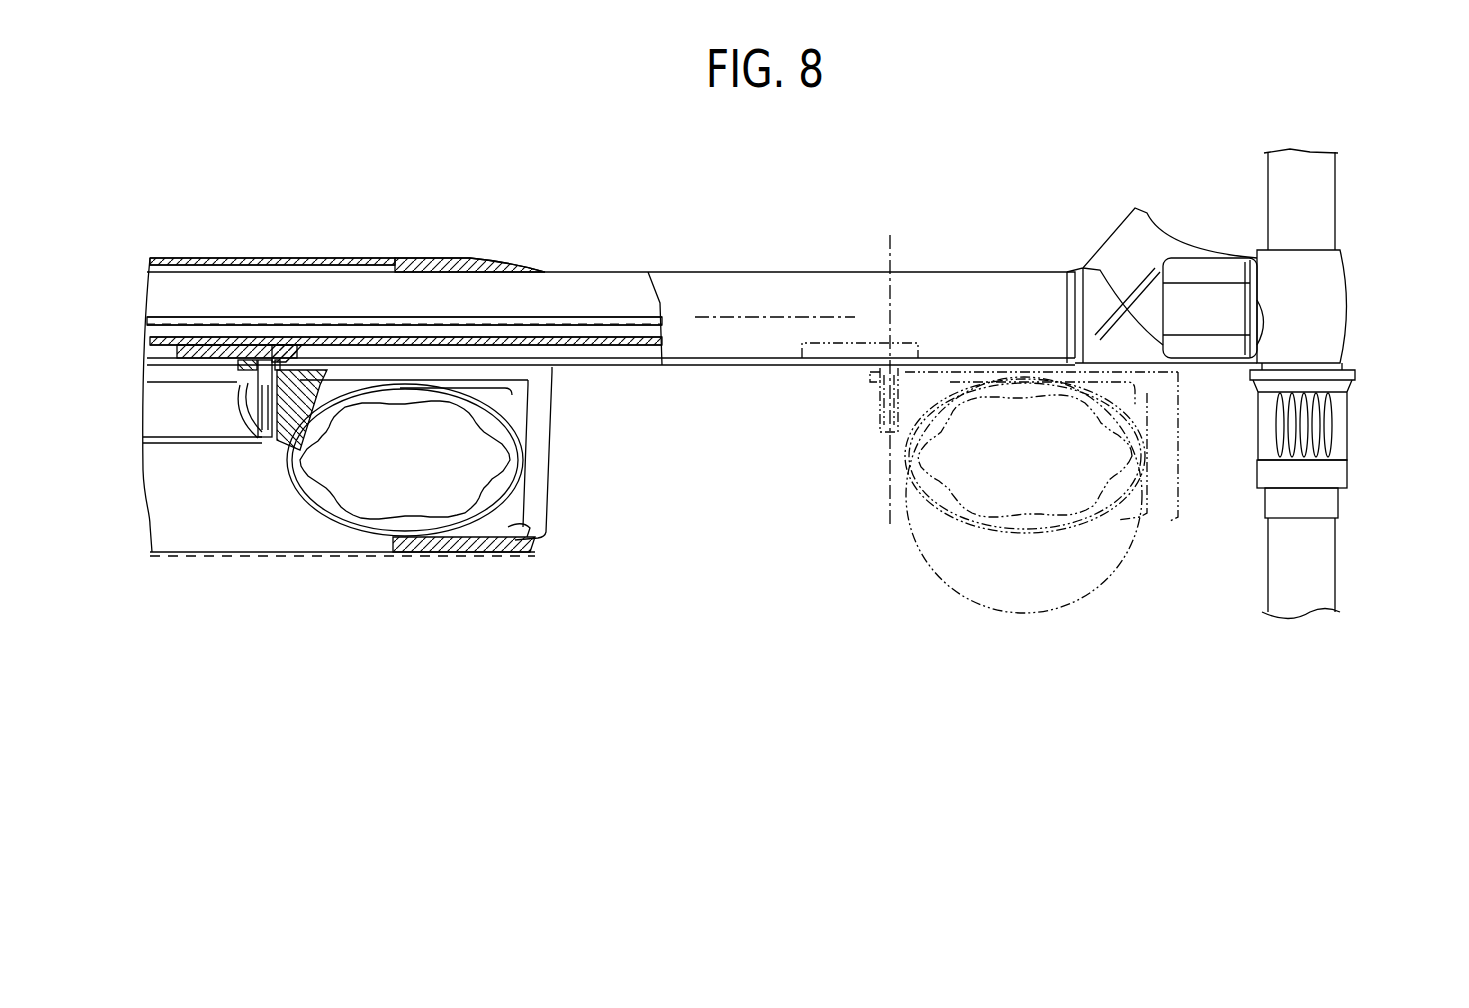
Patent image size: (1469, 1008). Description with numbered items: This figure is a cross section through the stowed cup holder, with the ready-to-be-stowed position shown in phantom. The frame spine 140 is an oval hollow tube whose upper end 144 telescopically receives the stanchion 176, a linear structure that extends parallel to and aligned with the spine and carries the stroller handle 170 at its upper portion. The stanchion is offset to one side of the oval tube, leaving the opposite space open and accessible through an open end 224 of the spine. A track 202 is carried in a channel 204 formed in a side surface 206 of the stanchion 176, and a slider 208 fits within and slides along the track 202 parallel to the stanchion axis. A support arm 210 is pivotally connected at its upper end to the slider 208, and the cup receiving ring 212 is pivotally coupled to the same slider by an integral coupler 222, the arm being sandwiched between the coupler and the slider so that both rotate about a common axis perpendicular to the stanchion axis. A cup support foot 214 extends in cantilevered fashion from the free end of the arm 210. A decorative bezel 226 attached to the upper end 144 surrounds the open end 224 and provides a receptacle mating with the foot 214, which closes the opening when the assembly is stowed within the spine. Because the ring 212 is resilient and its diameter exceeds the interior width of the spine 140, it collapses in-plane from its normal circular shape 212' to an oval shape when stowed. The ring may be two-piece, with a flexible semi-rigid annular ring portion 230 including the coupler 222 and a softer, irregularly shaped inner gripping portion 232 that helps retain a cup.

The frame spine 140 is at (180, 552).
The upper end of the spine 144 is at (445, 555).
The stroller handle 170 is at (1372, 291).
The stanchion 176 is at (702, 290).
The track 202 is at (357, 353).
The channel 204 is at (621, 348).
The side surface of the stanchion 206 is at (682, 370).
The slider 208 is at (910, 355).
The support arm 210 is at (970, 374).
The cup receiving ring 212 is at (1025, 493).
The ring (expanded position) 212' is at (1024, 528).
The cup support foot 214 is at (550, 462).
The coupler 222 is at (240, 390).
The open end of the spine 224 is at (511, 530).
The bezel 226 is at (495, 550).
The annular ring portion 230 is at (288, 480).
The inner gripping portion 232 is at (318, 432).